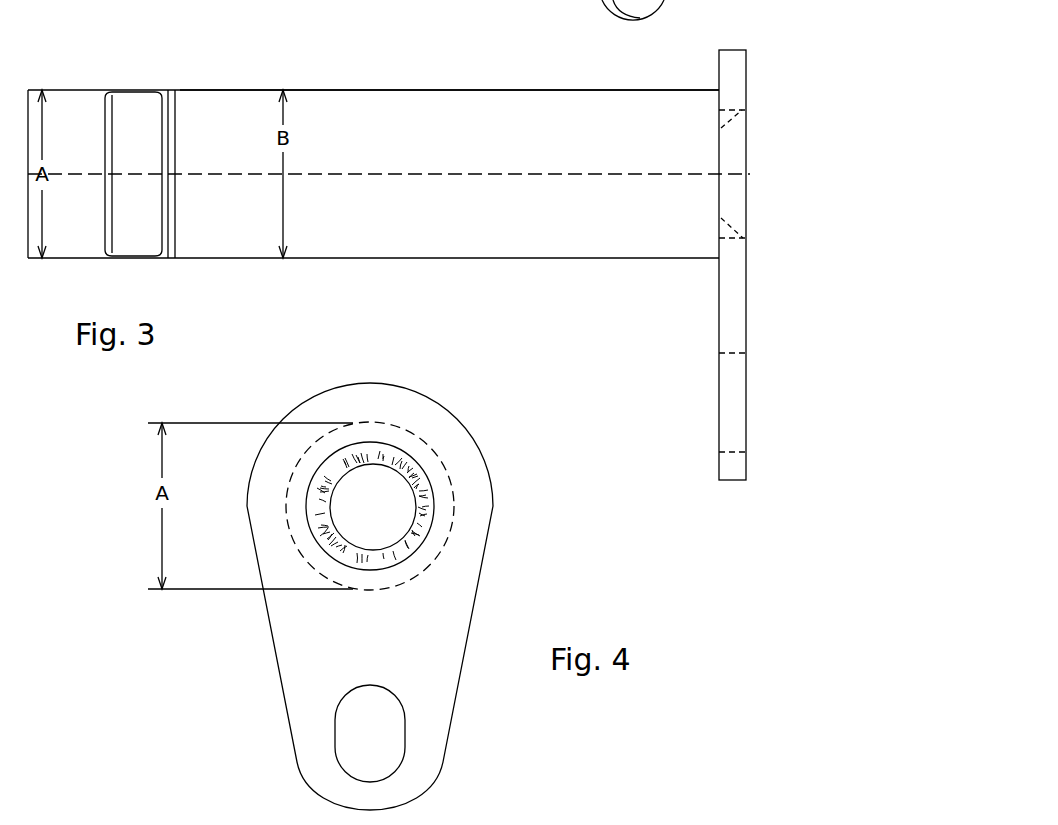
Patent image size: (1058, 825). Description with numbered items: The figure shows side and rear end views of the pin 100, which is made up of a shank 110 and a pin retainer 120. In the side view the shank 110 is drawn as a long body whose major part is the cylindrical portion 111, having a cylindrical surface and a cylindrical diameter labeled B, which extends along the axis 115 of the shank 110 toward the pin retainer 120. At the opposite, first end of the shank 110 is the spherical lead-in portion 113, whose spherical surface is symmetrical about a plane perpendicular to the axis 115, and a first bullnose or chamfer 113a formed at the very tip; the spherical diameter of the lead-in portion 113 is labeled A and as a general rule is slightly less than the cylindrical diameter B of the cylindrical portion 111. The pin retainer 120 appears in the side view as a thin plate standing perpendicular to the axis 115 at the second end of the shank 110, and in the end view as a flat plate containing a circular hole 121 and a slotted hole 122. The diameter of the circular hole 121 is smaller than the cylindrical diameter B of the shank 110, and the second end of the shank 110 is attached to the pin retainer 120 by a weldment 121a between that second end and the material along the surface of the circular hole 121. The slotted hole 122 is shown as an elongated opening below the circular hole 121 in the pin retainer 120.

In FIG. 3, the pin 100 is at (372, 28).
In FIG. 3, the shank 110 is at (494, 268).
In FIG. 3, the cylindrical portion 111 is at (556, 90).
In FIG. 3, the spherical lead-in portion 113 is at (137, 92).
In FIG. 3, the first bullnose or chamfer 113a is at (104, 96).
In FIG. 3, the axis 115 is at (394, 172).
In FIG. 3, the pin retainer 120 is at (707, 313).
In FIG. 4, the pin retainer 120 is at (494, 587).
In FIG. 4, the circular hole 121 is at (415, 470).
In FIG. 3, the weldment 121a is at (734, 224).
In FIG. 4, the weldment 121a is at (428, 503).
In FIG. 4, the slotted hole 122 is at (372, 700).